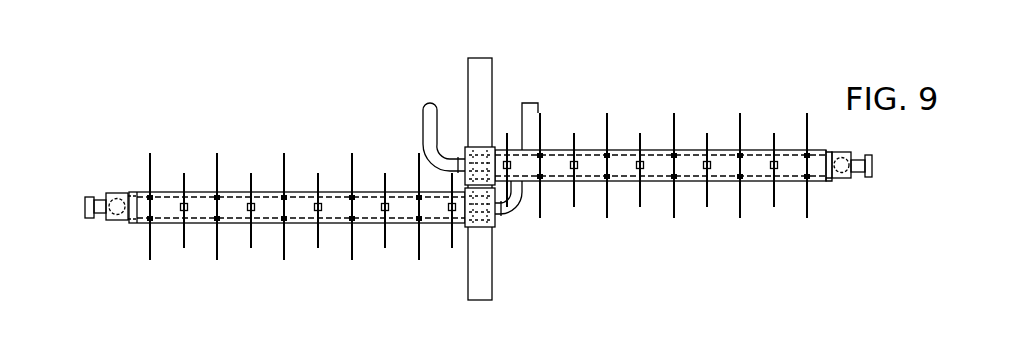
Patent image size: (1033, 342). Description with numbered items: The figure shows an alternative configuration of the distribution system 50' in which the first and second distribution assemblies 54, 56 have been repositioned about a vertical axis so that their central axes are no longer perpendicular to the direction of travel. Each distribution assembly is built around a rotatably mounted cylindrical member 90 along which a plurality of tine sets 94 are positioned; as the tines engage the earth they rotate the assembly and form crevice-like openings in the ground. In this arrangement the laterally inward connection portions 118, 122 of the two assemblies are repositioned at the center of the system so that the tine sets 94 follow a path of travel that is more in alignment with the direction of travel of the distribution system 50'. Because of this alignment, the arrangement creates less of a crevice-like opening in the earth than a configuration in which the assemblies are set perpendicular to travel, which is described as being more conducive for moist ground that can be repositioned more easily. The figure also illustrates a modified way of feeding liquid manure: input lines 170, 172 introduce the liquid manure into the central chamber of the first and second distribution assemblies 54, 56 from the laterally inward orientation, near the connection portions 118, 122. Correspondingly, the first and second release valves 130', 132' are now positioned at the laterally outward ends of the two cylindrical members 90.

The distribution system 50' is at (475, 170).
The first distribution assembly 54 is at (310, 128).
The second distribution assembly 56 is at (681, 90).
The cylindrical member 90 is at (232, 195).
The tine sets 94 is at (322, 174).
The laterally inward connection portion 118 is at (465, 226).
The laterally inward connection portion 122 is at (492, 147).
The first release valve 130' is at (97, 236).
The second release valve 132' is at (863, 150).
The input line 170 is at (425, 108).
The input line 172 is at (510, 205).